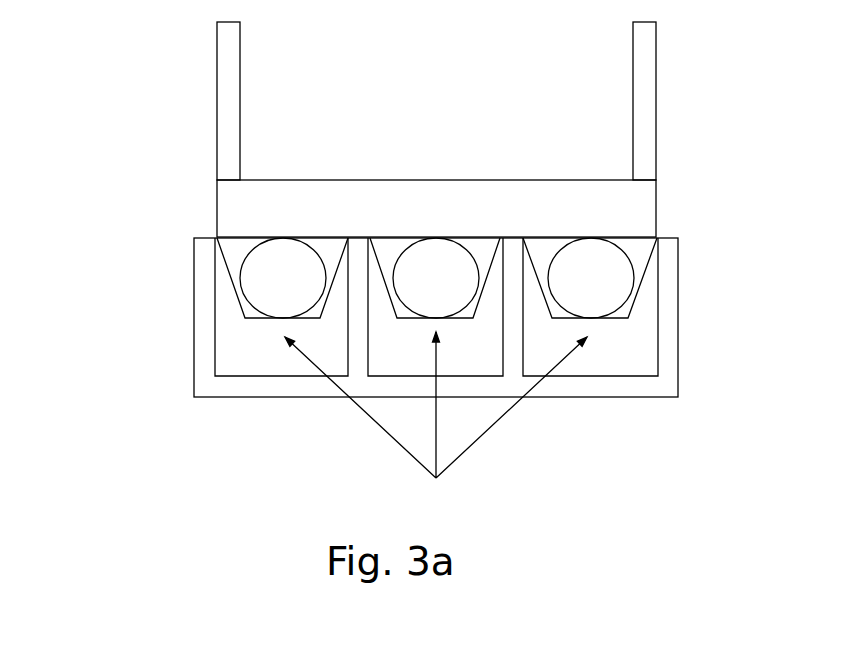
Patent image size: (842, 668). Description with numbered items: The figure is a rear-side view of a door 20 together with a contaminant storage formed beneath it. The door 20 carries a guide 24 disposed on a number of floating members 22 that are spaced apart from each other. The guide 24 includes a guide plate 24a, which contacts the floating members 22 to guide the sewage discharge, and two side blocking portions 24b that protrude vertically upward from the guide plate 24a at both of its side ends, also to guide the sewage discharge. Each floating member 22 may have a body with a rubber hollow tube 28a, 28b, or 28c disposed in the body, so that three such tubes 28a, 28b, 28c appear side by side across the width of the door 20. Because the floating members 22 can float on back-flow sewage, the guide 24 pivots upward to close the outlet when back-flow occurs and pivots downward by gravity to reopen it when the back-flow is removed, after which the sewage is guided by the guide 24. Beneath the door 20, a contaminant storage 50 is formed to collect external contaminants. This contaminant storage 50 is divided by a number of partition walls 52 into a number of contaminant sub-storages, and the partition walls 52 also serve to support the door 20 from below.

The door 20 is at (72, 148).
The floating members 22 is at (233, 253).
The guide 24 is at (121, 110).
The guide plate 24a is at (233, 196).
The side blocking portions 24b is at (227, 120).
The rubber hollow tube 28a is at (243, 318).
The rubber hollow tube 28b is at (403, 248).
The rubber hollow tube 28c is at (628, 318).
The contaminant storage 50 is at (436, 422).
The partition walls 52 is at (207, 328).